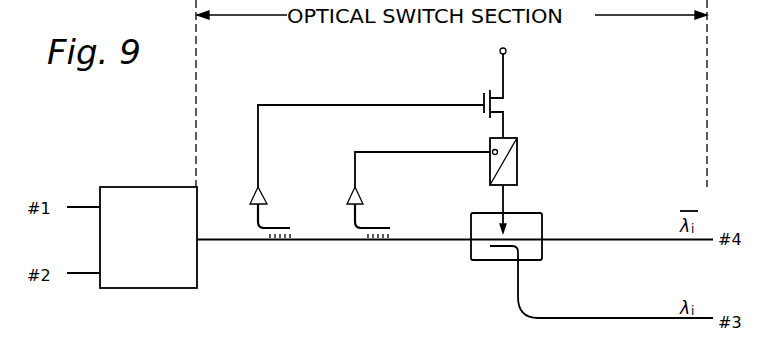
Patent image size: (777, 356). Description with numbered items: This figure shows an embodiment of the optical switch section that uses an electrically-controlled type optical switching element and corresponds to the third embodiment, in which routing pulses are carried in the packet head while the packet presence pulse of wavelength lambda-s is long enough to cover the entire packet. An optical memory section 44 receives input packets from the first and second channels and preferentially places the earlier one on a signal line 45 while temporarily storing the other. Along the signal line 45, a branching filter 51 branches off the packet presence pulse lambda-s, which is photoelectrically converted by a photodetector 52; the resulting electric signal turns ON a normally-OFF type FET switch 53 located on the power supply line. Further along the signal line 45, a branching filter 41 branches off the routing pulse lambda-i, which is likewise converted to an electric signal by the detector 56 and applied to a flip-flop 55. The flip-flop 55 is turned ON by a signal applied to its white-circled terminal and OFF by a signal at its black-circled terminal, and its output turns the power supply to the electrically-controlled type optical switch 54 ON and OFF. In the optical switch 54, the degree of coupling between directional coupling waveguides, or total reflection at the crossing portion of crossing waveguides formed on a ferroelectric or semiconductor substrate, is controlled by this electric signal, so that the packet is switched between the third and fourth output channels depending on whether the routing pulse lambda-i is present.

The optical memory section 44 is at (146, 186).
The signal line 45 is at (228, 243).
The branching filter 51 is at (280, 244).
The photodetector 52 is at (268, 198).
The branching filter 41 is at (377, 244).
The idler light source / detector 56 is at (372, 198).
The FET switch 53 is at (483, 95).
The flip-flop 55 is at (521, 158).
The electrically-controlled type optical switch 54 is at (541, 212).